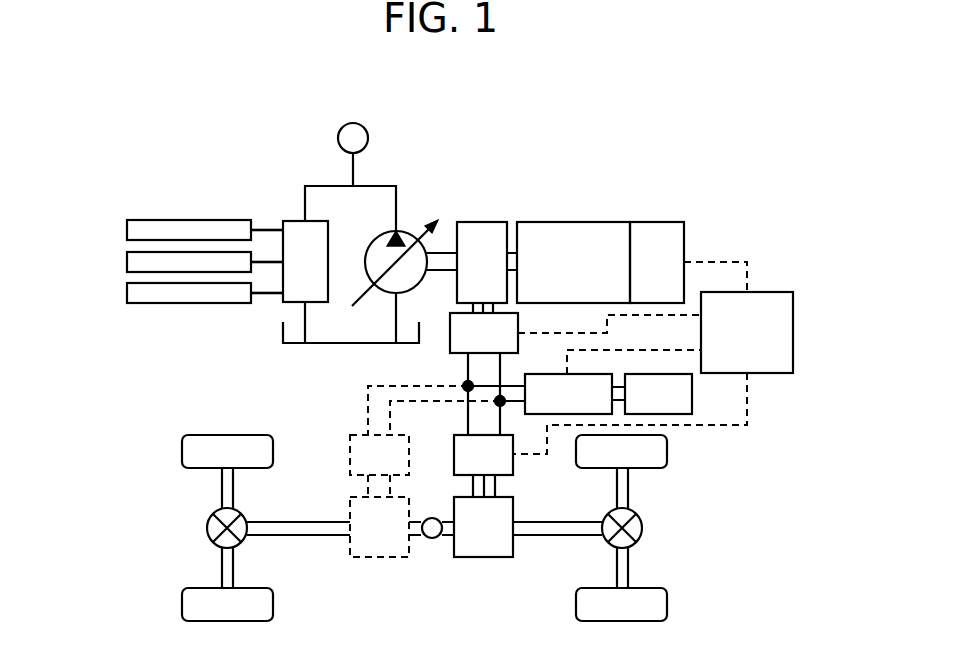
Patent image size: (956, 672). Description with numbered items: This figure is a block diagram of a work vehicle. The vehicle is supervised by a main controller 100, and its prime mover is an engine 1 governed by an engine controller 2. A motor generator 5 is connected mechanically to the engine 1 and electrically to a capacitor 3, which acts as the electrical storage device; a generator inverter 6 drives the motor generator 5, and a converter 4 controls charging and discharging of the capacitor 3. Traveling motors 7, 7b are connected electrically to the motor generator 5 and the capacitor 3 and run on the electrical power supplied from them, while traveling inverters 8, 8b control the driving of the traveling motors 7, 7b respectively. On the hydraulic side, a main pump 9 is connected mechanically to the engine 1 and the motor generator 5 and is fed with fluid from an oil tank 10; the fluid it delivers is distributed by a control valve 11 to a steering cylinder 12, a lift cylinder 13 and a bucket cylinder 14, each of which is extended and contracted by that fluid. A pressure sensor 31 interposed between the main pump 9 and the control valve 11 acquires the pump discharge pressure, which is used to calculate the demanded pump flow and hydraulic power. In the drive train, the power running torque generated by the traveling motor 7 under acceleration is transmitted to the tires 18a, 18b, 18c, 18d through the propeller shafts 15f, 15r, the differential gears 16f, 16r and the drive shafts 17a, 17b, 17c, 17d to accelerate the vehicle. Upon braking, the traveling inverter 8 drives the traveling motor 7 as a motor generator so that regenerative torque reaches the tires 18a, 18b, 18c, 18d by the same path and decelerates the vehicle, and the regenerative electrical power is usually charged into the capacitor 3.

The engine 1 is at (573, 235).
The engine controller 2 is at (688, 235).
The capacitor 3 is at (701, 396).
The converter 4 is at (613, 376).
The motor generator 5 is at (487, 239).
The generator inverter 6 is at (575, 370).
The traveling motor 7 is at (483, 556).
The traveling motor 7b is at (402, 556).
The traveling inverter 8 is at (505, 466).
The traveling inverter 8b is at (395, 441).
The main pump 9 is at (398, 250).
The oil tank 10 is at (351, 292).
The control valve 11 is at (293, 232).
The steering cylinder 12 is at (175, 231).
The lift cylinder 13 is at (175, 263).
The bucket cylinder 14 is at (175, 294).
The propeller shaft 15f is at (298, 558).
The propeller shaft 15r is at (557, 558).
The differential gear 16f is at (190, 528).
The differential gear 16r is at (658, 528).
The drive shaft 17a is at (190, 568).
The drive shaft 17b is at (190, 488).
The drive shaft 17c is at (659, 568).
The drive shaft 17d is at (659, 488).
The tire 18a is at (190, 604).
The tire 18b is at (190, 451).
The tire 18c is at (659, 604).
The tire 18d is at (659, 451).
The pressure sensor 31 is at (319, 154).
The main controller 100 is at (658, 345).